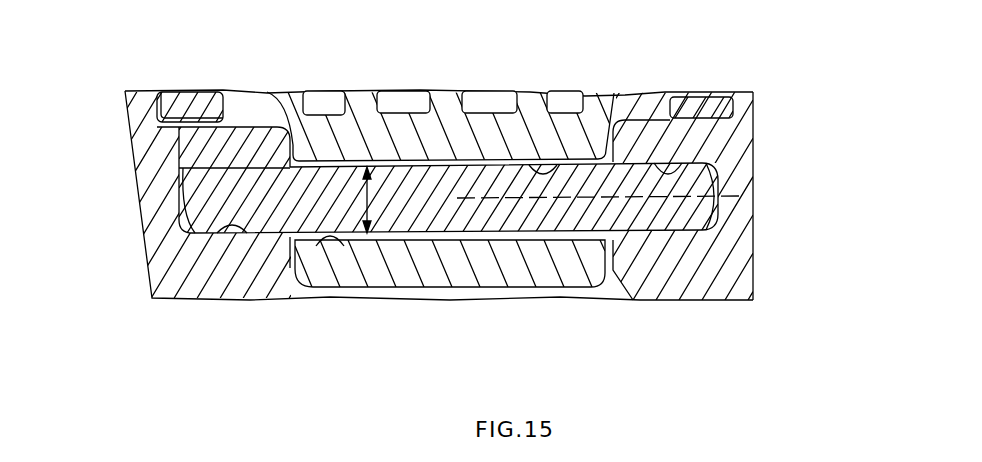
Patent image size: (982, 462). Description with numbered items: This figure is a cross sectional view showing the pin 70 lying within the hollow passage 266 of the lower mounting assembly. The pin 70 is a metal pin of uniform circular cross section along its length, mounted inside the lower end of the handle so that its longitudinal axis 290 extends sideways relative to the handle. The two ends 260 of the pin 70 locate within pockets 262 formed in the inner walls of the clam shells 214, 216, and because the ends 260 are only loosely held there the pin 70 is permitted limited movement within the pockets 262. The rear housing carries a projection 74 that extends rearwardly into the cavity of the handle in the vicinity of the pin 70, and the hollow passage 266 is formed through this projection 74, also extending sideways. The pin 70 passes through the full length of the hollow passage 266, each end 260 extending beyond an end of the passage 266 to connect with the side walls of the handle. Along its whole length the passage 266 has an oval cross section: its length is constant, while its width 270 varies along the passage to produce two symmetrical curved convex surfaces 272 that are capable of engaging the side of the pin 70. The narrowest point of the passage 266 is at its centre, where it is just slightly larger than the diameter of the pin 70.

The pin 70 is at (407, 210).
The projection 74 is at (386, 152).
The clam shell 214 is at (163, 222).
The clam shell 216 is at (735, 182).
The end of the pin 260 is at (212, 198).
The pocket 262 is at (688, 160).
The hollow passage 266 is at (592, 237).
The width of the oval cross section 270 is at (366, 170).
The curved convex surface 272 is at (531, 167).
The longitudinal axis 290 is at (518, 197).